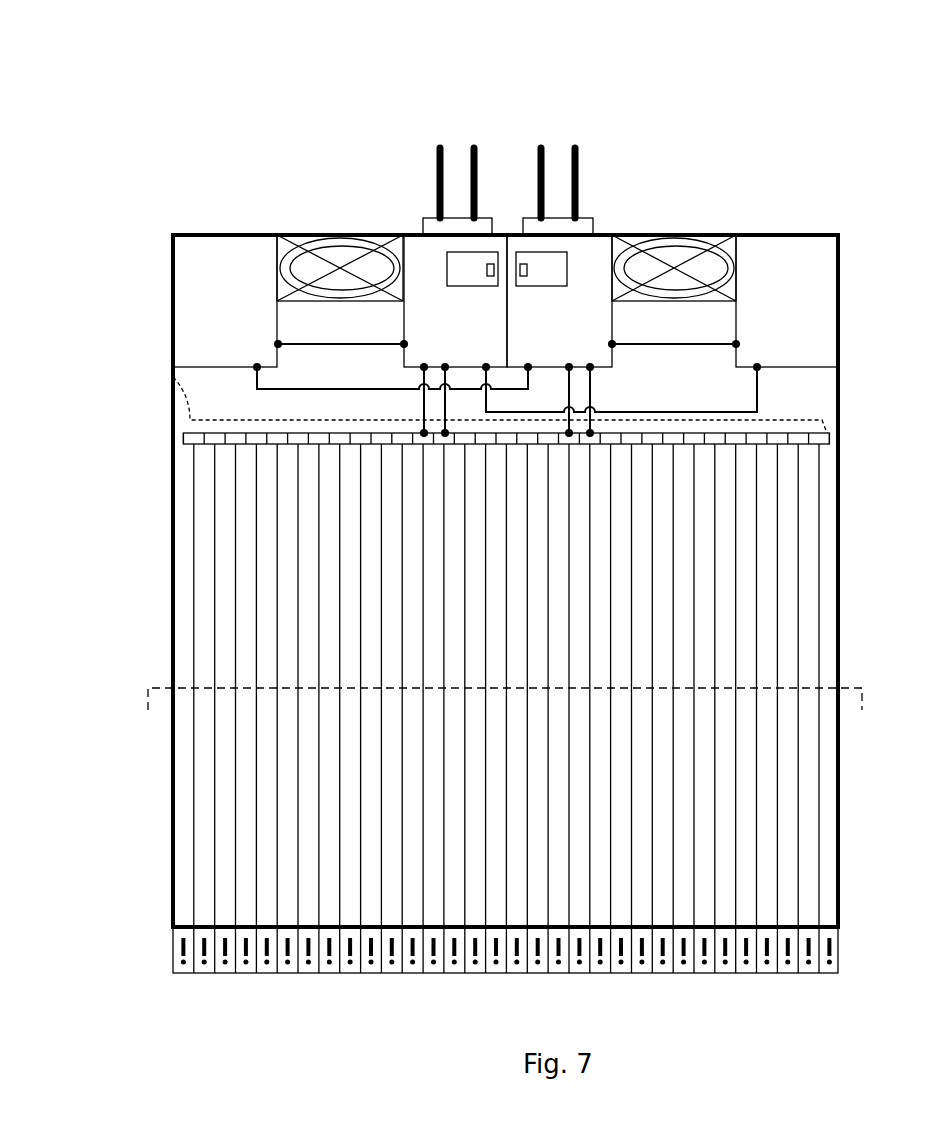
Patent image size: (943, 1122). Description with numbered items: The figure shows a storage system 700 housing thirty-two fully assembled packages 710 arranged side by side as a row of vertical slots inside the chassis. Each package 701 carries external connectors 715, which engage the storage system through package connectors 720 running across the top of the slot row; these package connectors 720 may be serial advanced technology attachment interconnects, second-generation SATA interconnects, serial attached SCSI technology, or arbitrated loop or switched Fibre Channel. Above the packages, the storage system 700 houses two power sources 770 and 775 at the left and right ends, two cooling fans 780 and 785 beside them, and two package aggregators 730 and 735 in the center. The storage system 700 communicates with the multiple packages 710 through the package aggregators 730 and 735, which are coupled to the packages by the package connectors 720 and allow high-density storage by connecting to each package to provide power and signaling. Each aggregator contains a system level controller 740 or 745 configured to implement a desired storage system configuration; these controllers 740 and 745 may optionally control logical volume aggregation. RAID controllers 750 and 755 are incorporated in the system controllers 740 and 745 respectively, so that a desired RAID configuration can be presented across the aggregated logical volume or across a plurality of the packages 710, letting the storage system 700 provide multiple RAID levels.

The storage system 700 is at (678, 122).
The package 701 is at (187, 617).
The packages 710 is at (156, 688).
The external connectors 715 is at (183, 433).
The package connectors 720 is at (173, 377).
The package aggregator 730 is at (455, 257).
The package aggregator 735 is at (559, 257).
The system level controller 740 is at (472, 269).
The system level controller 745 is at (541, 269).
The RAID controller 750 is at (492, 262).
The RAID controller 755 is at (522, 262).
The power source 770 is at (225, 301).
The power source 775 is at (787, 301).
The cooling fan 780 is at (342, 247).
The cooling fan 785 is at (673, 248).